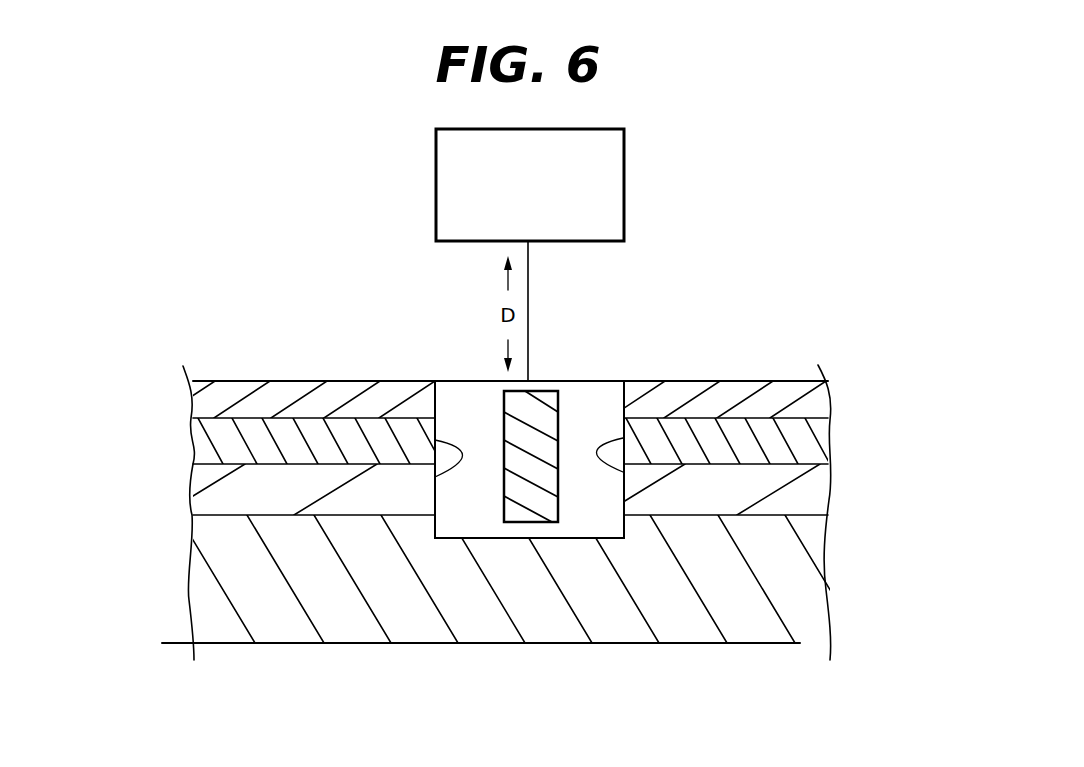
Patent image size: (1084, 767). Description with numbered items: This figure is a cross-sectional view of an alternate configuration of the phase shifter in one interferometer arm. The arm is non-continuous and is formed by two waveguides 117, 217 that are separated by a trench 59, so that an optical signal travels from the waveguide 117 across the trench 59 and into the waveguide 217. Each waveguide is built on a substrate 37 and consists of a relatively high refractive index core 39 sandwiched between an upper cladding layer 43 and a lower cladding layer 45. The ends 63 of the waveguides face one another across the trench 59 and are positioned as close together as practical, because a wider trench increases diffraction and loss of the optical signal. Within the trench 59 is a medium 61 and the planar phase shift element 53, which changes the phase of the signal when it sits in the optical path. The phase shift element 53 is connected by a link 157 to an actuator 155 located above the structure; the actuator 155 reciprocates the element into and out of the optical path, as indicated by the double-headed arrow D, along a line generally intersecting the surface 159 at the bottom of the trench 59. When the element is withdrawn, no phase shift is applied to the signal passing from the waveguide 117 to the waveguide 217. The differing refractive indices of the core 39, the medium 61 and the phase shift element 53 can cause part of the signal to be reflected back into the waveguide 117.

The actuator 155 is at (436, 207).
The link 157 is at (528, 287).
The phase shift element 53 is at (559, 399).
The trench 59 is at (452, 392).
The waveguide 117 is at (297, 378).
The waveguide 217 is at (687, 378).
The upper cladding layer 43 is at (818, 403).
The core 39 is at (207, 447).
The end of waveguide 63 is at (435, 471).
The lower cladding layer 45 is at (802, 495).
The substrate 37 is at (202, 590).
The medium 61 is at (574, 491).
The surface 159 is at (575, 538).